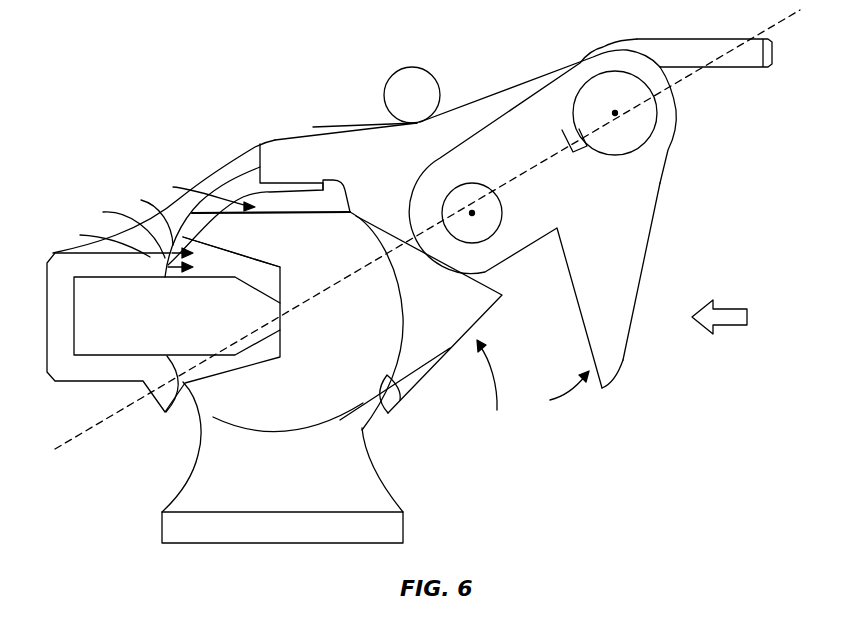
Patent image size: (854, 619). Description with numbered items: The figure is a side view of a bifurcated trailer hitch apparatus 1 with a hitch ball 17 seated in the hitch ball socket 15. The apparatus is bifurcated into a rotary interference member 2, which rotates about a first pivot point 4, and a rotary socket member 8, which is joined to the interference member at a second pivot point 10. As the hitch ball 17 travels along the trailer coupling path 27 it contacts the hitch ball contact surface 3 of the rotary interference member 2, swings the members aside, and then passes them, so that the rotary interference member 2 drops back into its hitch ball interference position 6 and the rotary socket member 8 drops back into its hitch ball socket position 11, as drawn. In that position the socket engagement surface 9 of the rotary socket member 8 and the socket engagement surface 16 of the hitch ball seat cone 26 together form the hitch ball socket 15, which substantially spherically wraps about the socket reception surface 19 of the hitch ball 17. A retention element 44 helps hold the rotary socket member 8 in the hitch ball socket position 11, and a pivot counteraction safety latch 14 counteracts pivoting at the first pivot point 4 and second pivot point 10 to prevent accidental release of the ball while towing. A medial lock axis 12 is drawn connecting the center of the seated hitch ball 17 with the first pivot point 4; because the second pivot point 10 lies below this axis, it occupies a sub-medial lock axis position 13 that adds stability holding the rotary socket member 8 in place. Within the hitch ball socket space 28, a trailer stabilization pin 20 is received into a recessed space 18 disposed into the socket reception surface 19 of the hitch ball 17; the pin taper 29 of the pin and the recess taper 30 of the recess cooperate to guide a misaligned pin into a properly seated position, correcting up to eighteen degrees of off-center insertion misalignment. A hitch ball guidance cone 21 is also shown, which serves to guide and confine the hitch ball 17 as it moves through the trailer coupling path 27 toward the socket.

The bifurcated trailer hitch apparatus 1 is at (97, 562).
The rotary interference member 2 is at (627, 312).
The hitch ball contact surface 3 is at (627, 352).
The first pivot point 4 is at (614, 113).
The hitch ball interference position 6 is at (559, 394).
The rotary socket member 8 is at (412, 373).
The socket engagement surface 9 is at (397, 390).
The second pivot point 10 is at (460, 213).
The hitch ball socket position 11 is at (494, 388).
The medial lock axis 12 is at (95, 427).
The sub-medial lock axis position 13 is at (473, 228).
The pivot counteraction safety latch 14 is at (395, 73).
The hitch ball socket 15 is at (198, 192).
The socket engagement surface 16 is at (152, 222).
The hitch ball 17 is at (302, 410).
The recessed space 18 is at (100, 239).
The socket reception surface 19 is at (253, 435).
The trailer stabilization pin 20 is at (110, 340).
The hitch ball guidance cone 21 is at (680, 44).
The hitch ball seat cone 26 is at (232, 183).
The trailer coupling path 27 is at (723, 327).
The hitch ball socket space 28 is at (132, 236).
The pin taper 29 is at (270, 288).
The recess taper 30 is at (217, 373).
The retention element 44 is at (302, 183).